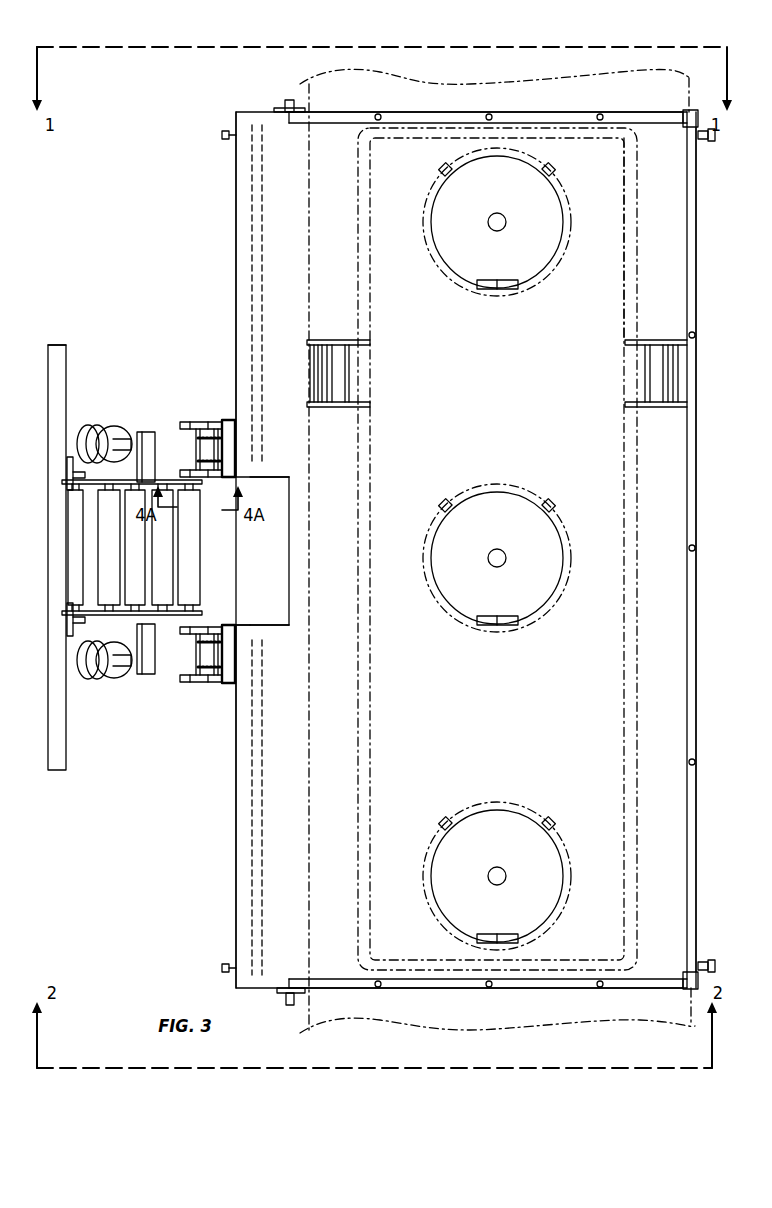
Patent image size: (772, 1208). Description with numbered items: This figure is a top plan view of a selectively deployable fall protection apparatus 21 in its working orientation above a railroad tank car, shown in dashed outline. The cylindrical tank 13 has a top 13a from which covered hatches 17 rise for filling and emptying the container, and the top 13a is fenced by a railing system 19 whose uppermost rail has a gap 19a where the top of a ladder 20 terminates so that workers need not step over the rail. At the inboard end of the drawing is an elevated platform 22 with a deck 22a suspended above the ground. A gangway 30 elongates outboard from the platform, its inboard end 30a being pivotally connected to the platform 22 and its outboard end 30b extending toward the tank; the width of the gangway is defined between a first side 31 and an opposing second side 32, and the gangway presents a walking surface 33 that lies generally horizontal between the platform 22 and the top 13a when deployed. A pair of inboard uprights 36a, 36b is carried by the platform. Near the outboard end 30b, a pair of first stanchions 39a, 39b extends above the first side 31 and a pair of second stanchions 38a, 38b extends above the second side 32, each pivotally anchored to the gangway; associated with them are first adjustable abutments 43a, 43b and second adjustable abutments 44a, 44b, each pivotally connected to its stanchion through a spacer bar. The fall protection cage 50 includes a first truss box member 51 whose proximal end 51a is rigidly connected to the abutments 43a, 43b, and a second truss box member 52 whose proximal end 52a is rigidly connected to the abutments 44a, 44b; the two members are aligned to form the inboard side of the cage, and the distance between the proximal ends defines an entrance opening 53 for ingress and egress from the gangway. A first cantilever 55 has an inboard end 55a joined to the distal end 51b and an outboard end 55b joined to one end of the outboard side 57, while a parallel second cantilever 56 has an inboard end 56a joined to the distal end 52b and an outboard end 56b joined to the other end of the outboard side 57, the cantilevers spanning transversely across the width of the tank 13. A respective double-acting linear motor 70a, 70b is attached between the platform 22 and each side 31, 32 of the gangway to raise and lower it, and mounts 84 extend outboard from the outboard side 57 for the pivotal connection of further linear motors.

The tank 13 is at (527, 83).
The top of the tank 13a is at (548, 327).
The covered hatch 17 is at (432, 225).
The railing system 19 is at (640, 292).
The gap 19a is at (366, 375).
The ladder 20 is at (330, 340).
The apparatus 21 is at (179, 38).
The elevated platform 22 is at (62, 745).
The deck 22a is at (113, 688).
The gangway 30 is at (157, 478).
The inboard end of the gangway 30a is at (70, 578).
The outboard end of the gangway 30b is at (200, 578).
The first side of the gangway 31 is at (70, 462).
The second side of the gangway 32 is at (70, 636).
The walking surface 33 is at (105, 537).
The inboard upright 36a is at (72, 478).
The inboard upright 36b is at (68, 620).
The second stanchion 38a is at (193, 688).
The second stanchion 38b is at (187, 633).
The first stanchion 39a is at (192, 422).
The first stanchion 39b is at (180, 440).
The first adjustable abutment 43a is at (226, 422).
The first adjustable abutment 43b is at (236, 487).
The second adjustable abutment 44a is at (232, 690).
The second adjustable abutment 44b is at (262, 638).
The fall protection cage 50 is at (640, 100).
The first truss box member 51 is at (243, 205).
The proximal end of the first truss box member 51a is at (268, 482).
The distal end of the first truss box member 51b is at (283, 125).
The second truss box member 52 is at (243, 920).
The proximal end of the second truss box member 52a is at (262, 637).
The distal end of the second truss box member 52b is at (280, 982).
The entrance opening 53 is at (275, 535).
The first cantilever 55 is at (438, 112).
The inboard end of the first cantilever 55a is at (295, 118).
The outboard end of the first cantilever 55b is at (672, 118).
The second cantilever 56 is at (530, 988).
The inboard end of the second cantilever 56a is at (305, 975).
The outboard end of the second cantilever 56b is at (663, 987).
The outboard side of the fall protection cage 57 is at (700, 492).
The double-acting linear motor 70a is at (114, 412).
The double-acting linear motor 70b is at (116, 698).
The mount 84 is at (700, 130).